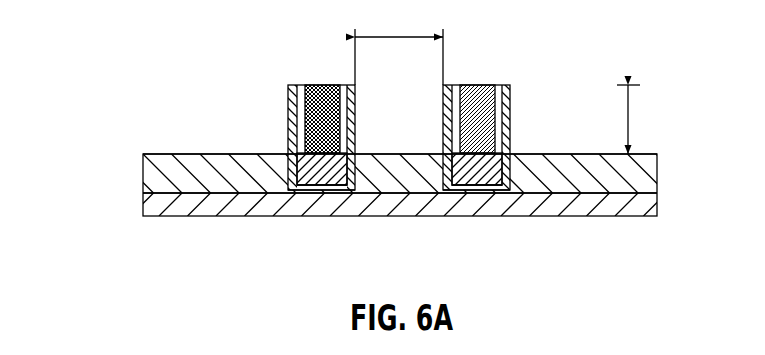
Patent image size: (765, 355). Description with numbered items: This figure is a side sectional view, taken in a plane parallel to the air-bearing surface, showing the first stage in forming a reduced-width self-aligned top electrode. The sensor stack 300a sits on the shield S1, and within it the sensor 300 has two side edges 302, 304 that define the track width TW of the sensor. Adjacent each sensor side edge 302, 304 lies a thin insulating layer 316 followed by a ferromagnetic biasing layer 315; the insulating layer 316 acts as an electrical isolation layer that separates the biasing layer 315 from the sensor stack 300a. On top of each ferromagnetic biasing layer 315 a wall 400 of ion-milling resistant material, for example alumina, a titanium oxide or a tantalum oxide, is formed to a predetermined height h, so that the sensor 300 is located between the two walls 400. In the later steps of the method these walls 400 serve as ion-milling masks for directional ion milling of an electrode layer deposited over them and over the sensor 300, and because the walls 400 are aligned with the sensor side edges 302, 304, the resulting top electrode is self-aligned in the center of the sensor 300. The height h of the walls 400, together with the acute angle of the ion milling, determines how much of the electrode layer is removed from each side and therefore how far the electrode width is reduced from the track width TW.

The sensor 300 is at (407, 154).
The sensor stack 300a is at (135, 153).
The shield S1 is at (145, 201).
The side edge 302 is at (346, 185).
The side edge 304 is at (452, 168).
The ferromagnetic biasing layer 315 is at (312, 190).
The insulating layer 316 is at (288, 125).
The walls 400 is at (323, 85).
The track width TW is at (399, 42).
The wall height h is at (637, 119).